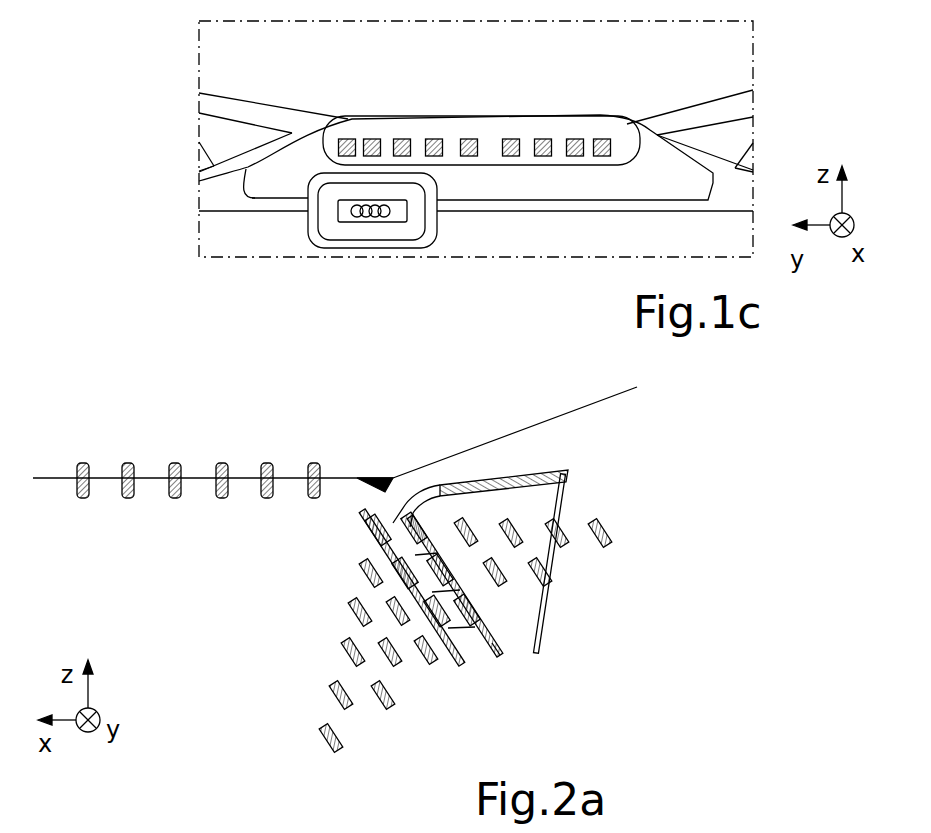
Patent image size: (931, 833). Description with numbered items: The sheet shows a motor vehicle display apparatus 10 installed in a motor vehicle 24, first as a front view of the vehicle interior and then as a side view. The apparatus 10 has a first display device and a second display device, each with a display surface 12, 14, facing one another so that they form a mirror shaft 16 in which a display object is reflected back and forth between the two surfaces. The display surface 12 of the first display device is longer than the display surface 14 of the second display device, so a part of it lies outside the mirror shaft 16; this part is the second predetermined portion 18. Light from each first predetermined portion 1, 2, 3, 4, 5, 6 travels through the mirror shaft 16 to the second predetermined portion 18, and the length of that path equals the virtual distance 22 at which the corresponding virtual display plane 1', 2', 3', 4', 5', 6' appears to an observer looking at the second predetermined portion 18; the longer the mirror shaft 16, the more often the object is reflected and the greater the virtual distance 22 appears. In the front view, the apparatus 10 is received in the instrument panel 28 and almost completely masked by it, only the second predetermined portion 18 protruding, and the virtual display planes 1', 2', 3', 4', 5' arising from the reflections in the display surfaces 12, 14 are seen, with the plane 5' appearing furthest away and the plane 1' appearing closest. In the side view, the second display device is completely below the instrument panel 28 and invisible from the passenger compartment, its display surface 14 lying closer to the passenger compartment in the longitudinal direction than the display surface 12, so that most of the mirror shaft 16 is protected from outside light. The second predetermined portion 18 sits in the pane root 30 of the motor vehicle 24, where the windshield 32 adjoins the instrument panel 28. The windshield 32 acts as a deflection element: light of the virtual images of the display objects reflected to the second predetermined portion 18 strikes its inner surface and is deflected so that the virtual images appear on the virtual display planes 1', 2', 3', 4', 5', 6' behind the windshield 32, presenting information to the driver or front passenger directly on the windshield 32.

In FIG. 2A, the virtual display plane 1' is at (325, 444).
In FIG. 2A, the virtual display plane 2' is at (278, 444).
In FIG. 2A, the virtual display plane 3' is at (231, 444).
In FIG. 2A, the virtual display plane 4' is at (185, 444).
In FIG. 1C, the virtual display plane 5' is at (461, 115).
In FIG. 2A, the virtual display plane 5' is at (138, 444).
In FIG. 2A, the virtual display plane 6' is at (94, 444).
In FIG. 2A, the first predetermined portion 1 is at (427, 488).
In FIG. 2A, the first predetermined portion 2 is at (427, 518).
In FIG. 2A, the first predetermined portion 3 is at (369, 533).
In FIG. 2A, the first predetermined portion 4 is at (463, 554).
In FIG. 2A, the first predetermined portion 5 is at (463, 645).
In FIG. 2A, the first predetermined portion 6 is at (493, 661).
In FIG. 2A, the motor vehicle display apparatus 10 is at (405, 468).
In FIG. 2A, the display surface 12 is at (465, 675).
In FIG. 2A, the display surface 14 is at (503, 645).
In FIG. 2A, the mirror shaft 16 is at (480, 668).
In FIG. 2A, the second predetermined portion 18 is at (357, 514).
In FIG. 2A, the virtual distance 22 is at (45, 513).
In FIG. 1C, the motor vehicle 24 is at (456, 246).
In FIG. 2A, the motor vehicle 24 is at (655, 578).
In FIG. 1C, the instrument panel 28 is at (262, 175).
In FIG. 2A, the instrument panel 28 is at (548, 468).
In FIG. 1C, the pane root 30 is at (333, 121).
In FIG. 2A, the windshield 32 is at (500, 432).